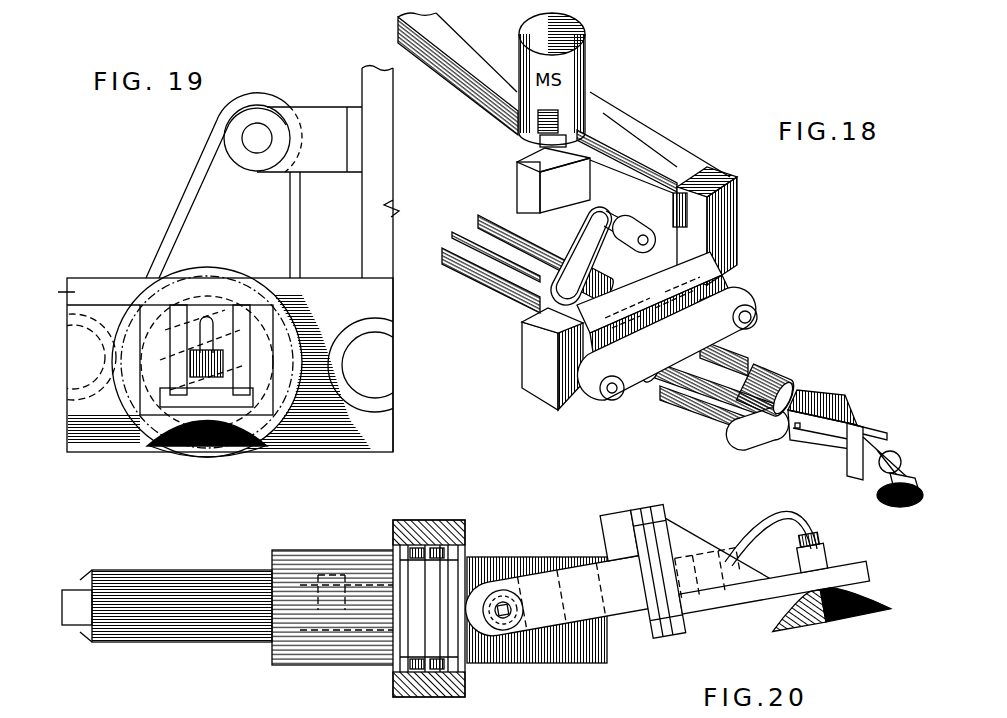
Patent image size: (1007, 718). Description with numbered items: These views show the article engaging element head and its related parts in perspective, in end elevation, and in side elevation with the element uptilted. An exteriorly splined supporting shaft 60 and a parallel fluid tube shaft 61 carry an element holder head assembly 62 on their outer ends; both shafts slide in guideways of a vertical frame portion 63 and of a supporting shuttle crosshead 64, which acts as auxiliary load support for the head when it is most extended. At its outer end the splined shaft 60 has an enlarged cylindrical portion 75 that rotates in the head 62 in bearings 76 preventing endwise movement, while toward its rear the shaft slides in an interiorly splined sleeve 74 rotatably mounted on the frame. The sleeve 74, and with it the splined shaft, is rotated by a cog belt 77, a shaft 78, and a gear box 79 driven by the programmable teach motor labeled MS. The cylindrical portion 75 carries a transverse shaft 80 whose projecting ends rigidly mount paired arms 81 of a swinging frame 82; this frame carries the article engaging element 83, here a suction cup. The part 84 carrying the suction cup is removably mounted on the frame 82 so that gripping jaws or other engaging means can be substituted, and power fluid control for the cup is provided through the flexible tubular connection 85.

In FIG. 18, the splined supporting shaft 60 is at (503, 197).
In FIG. 20, the splined supporting shaft 60 is at (170, 551).
In FIG. 18, the fluid tube shaft 61 is at (488, 282).
In FIG. 19, the element holder head assembly 62 is at (212, 274).
In FIG. 18, the element holder head assembly 62 is at (793, 383).
In FIG. 20, the element holder head assembly 62 is at (467, 524).
In FIG. 19, the vertical frame portion 63 is at (392, 180).
In FIG. 18, the vertical frame portion 63 is at (401, 195).
In FIG. 19, the supporting shuttle crosshead 64 is at (370, 452).
In FIG. 18, the supporting shuttle crosshead 64 is at (646, 398).
In FIG. 18, the interiorly splined sleeve 74 is at (609, 252).
In FIG. 20, the enlarged cylindrical portion 75 is at (475, 556).
In FIG. 20, the bearings 76 is at (433, 510).
In FIG. 19, the cog belt 77 is at (178, 206).
In FIG. 18, the cog belt 77 is at (571, 236).
In FIG. 19, the shaft 78 is at (255, 150).
In FIG. 18, the shaft 78 is at (618, 224).
In FIG. 18, the gear box 79 is at (520, 170).
In FIG. 20, the transverse shaft 80 is at (505, 620).
In FIG. 18, the paired arms 81 is at (830, 453).
In FIG. 20, the paired arms 81 is at (612, 615).
In FIG. 19, the swinging frame 82 is at (280, 316).
In FIG. 18, the swinging frame 82 is at (877, 420).
In FIG. 20, the swinging frame 82 is at (652, 509).
In FIG. 19, the article engaging element 83 is at (185, 448).
In FIG. 18, the article engaging element 83 is at (895, 507).
In FIG. 20, the article engaging element 83 is at (848, 617).
In FIG. 20, the suction cup carrying part 84 is at (682, 636).
In FIG. 20, the flexible tubular connection 85 is at (777, 513).